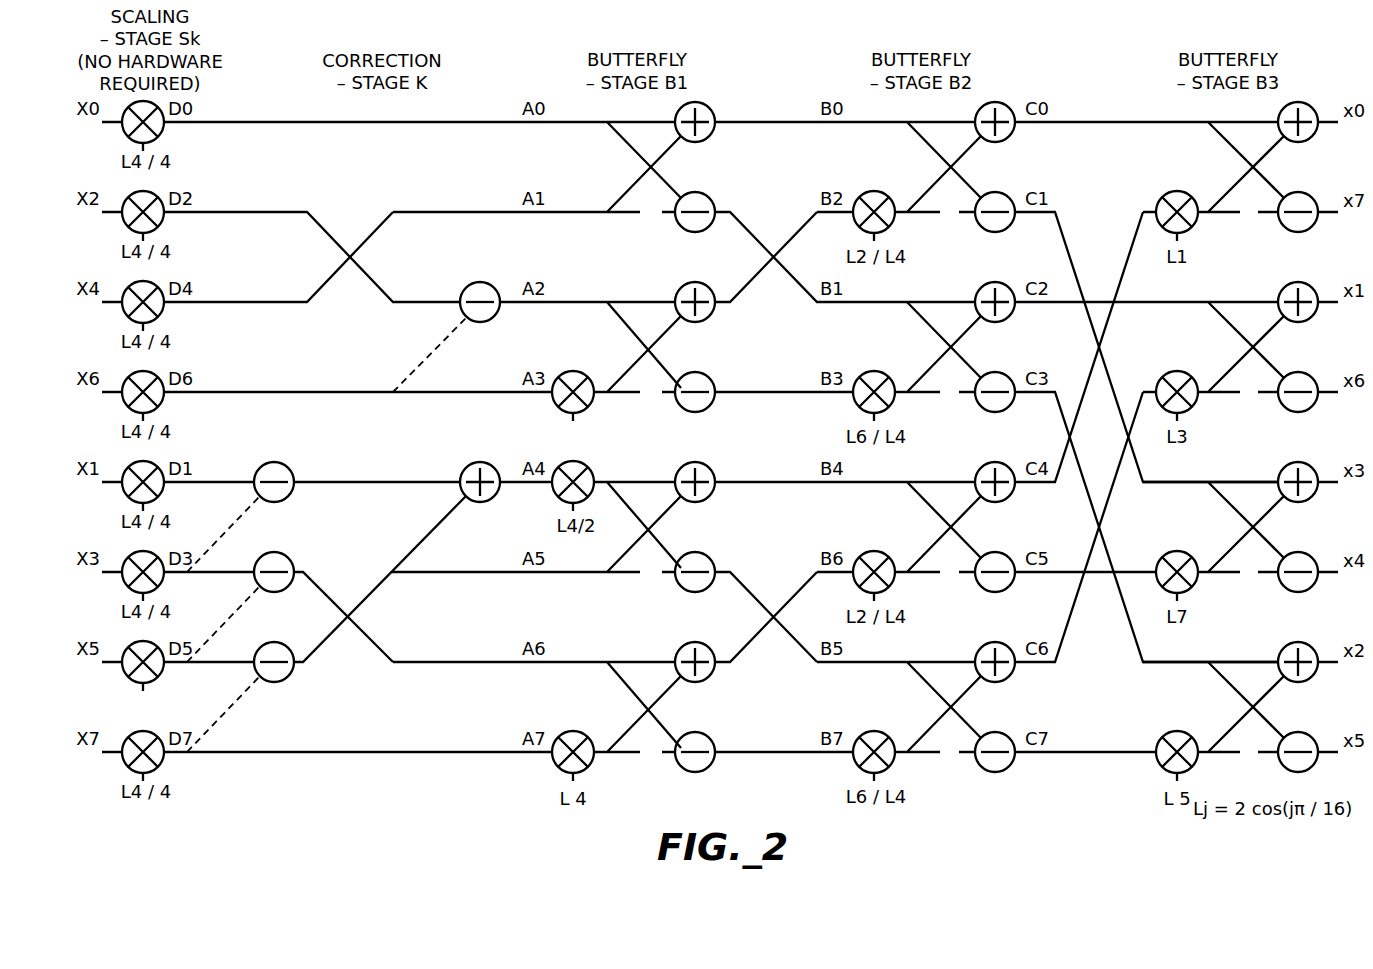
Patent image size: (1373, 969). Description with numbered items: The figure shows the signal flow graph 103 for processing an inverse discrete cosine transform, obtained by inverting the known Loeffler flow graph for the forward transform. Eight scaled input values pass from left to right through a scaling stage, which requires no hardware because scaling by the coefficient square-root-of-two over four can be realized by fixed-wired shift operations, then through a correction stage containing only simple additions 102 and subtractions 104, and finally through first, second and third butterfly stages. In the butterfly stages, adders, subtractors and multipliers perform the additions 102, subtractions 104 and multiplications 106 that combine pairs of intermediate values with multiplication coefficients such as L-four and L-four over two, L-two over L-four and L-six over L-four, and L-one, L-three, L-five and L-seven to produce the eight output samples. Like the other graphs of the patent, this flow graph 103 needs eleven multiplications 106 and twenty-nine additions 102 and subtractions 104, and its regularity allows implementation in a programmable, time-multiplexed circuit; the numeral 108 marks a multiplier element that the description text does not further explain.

The additions 102 is at (708, 104).
The subtractions 104 is at (708, 194).
The multiplications 106 is at (586, 413).
The scaling multiplier 108 is at (135, 644).
The signal flow graph for an IDCT 103 is at (444, 787).